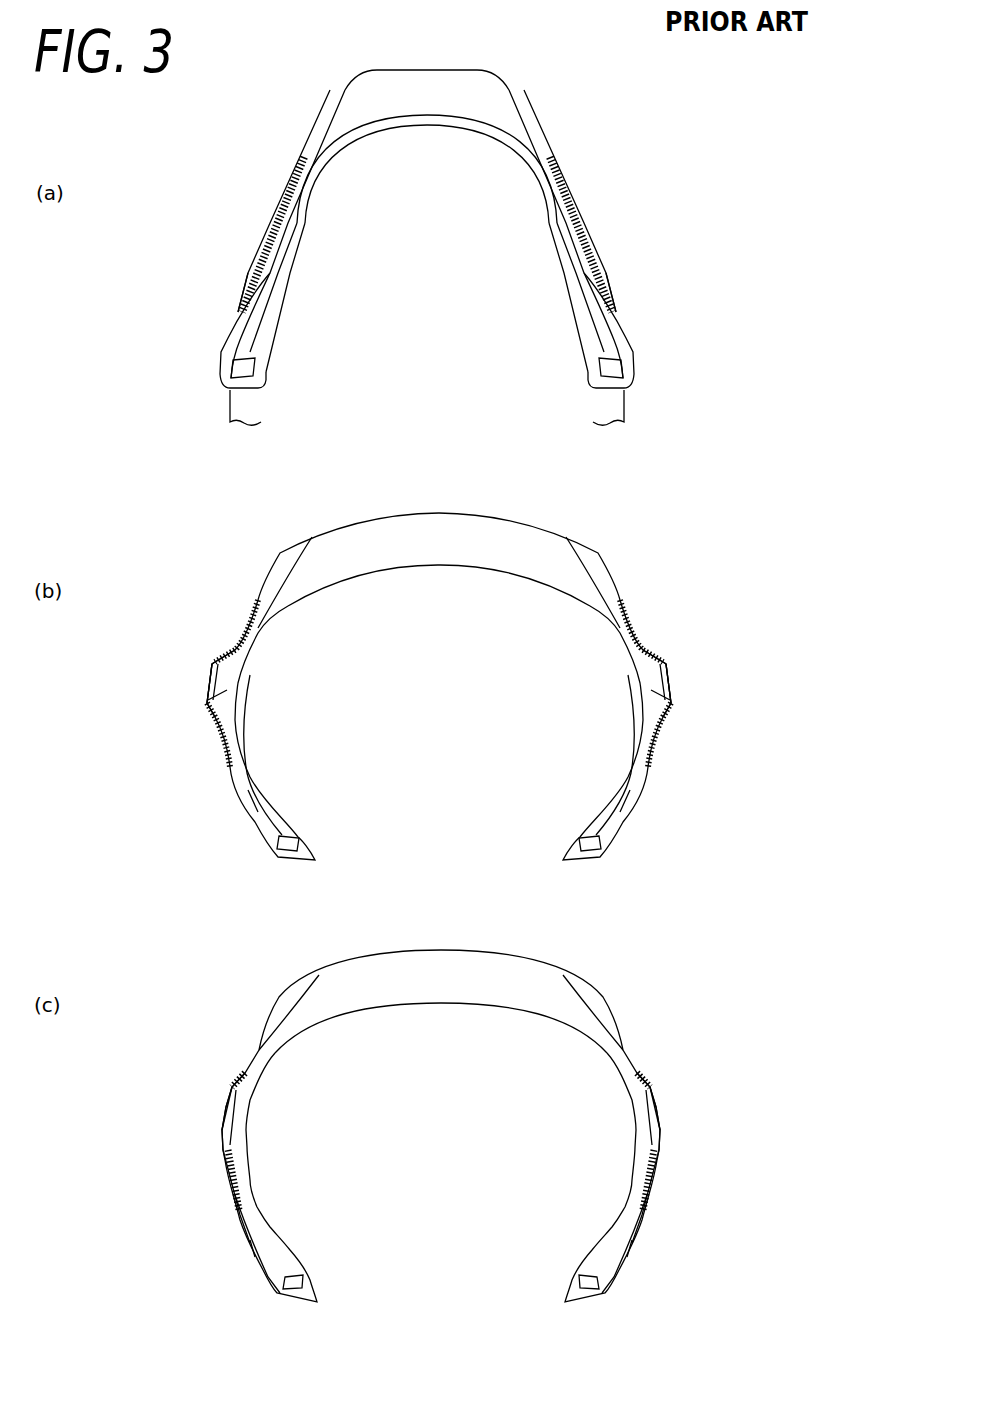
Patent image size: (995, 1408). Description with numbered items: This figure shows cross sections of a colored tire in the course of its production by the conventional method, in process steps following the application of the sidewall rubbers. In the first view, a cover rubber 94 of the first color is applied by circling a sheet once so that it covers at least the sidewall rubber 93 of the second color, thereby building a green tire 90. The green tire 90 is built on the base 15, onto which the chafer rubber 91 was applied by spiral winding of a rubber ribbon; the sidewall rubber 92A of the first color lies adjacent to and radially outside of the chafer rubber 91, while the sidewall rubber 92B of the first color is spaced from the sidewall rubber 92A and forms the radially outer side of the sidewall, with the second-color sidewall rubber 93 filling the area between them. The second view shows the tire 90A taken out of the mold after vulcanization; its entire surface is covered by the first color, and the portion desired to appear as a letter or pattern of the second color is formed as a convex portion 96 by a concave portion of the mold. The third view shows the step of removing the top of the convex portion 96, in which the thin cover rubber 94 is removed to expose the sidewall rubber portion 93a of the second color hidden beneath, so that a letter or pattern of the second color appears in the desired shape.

The green tire 90 is at (584, 150).
The tire 90A is at (215, 567).
The base 15 is at (297, 246).
The chafer rubber 91 is at (220, 368).
The sidewall rubber 92A is at (237, 303).
The sidewall rubber 92B is at (307, 132).
The sidewall rubber 93 is at (269, 273).
The sidewall rubber portion 93a is at (224, 1123).
The cover rubber 94 is at (280, 207).
The convex portion 96 is at (214, 662).